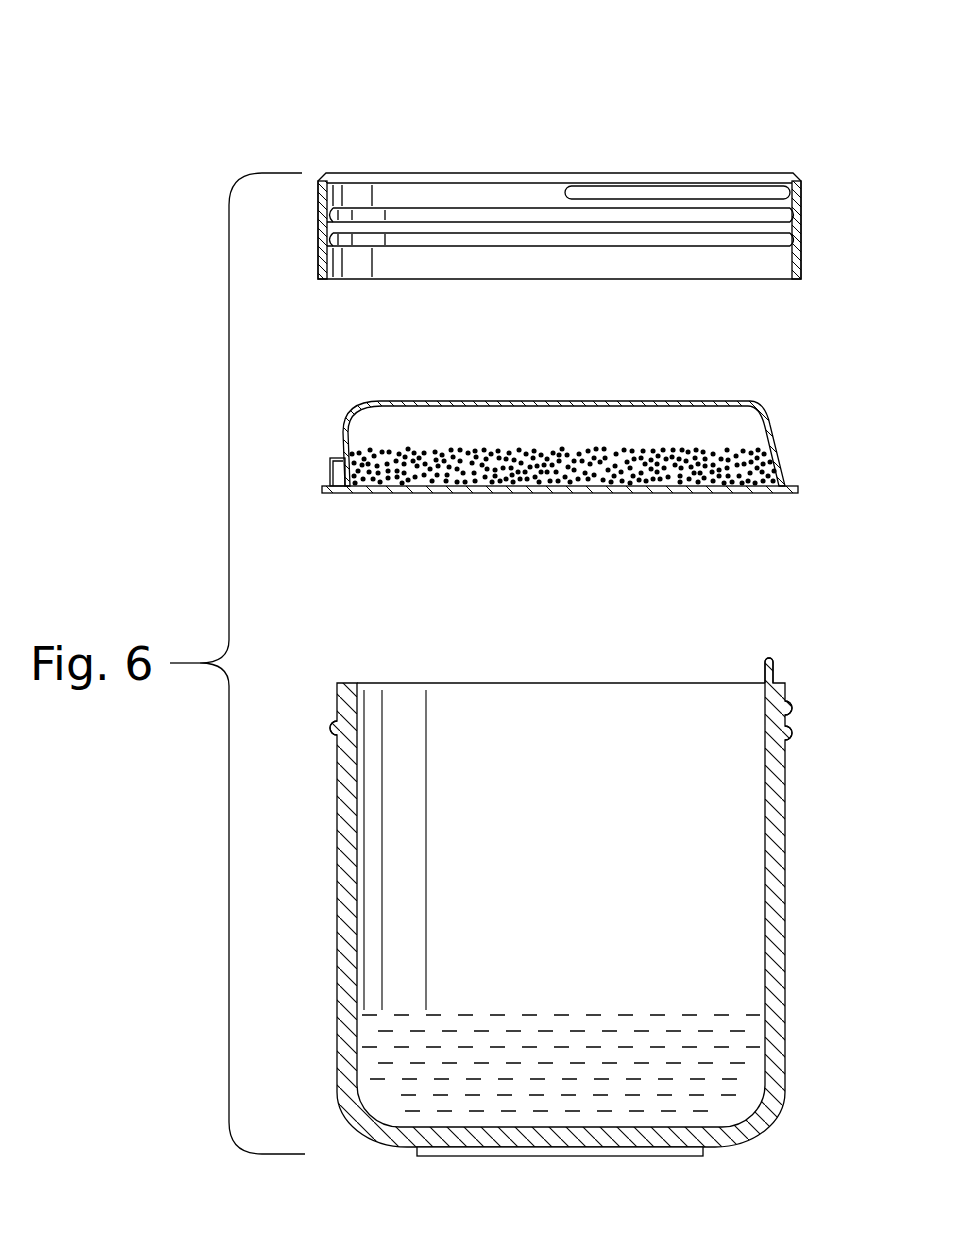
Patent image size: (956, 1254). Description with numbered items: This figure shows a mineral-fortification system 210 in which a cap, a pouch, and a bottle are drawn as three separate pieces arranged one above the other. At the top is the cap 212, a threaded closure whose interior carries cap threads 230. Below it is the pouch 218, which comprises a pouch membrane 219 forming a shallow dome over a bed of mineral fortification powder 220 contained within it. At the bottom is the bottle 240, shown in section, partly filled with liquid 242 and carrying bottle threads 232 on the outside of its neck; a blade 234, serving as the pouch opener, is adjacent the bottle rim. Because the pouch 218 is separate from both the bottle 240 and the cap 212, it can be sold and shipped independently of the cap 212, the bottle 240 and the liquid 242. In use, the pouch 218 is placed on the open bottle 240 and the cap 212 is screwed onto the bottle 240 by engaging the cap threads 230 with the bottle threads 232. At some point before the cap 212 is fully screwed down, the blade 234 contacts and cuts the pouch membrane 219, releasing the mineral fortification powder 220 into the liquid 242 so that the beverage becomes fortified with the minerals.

The mineral-fortification system 210 is at (452, 113).
The cap 212 is at (803, 192).
The cap threads 230 is at (797, 232).
The pouch 218 is at (792, 388).
The pouch membrane 219 is at (690, 400).
The mineral fortification powder 220 is at (762, 458).
The bottle 240 is at (786, 910).
The blade 234 is at (777, 668).
The bottle threads 232 is at (795, 708).
The liquid 242 is at (750, 1058).